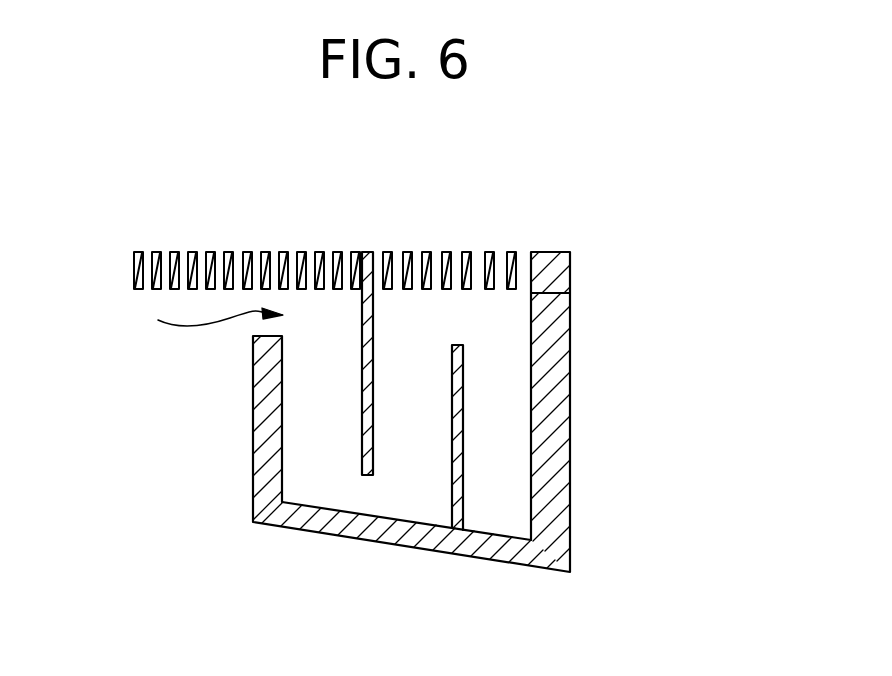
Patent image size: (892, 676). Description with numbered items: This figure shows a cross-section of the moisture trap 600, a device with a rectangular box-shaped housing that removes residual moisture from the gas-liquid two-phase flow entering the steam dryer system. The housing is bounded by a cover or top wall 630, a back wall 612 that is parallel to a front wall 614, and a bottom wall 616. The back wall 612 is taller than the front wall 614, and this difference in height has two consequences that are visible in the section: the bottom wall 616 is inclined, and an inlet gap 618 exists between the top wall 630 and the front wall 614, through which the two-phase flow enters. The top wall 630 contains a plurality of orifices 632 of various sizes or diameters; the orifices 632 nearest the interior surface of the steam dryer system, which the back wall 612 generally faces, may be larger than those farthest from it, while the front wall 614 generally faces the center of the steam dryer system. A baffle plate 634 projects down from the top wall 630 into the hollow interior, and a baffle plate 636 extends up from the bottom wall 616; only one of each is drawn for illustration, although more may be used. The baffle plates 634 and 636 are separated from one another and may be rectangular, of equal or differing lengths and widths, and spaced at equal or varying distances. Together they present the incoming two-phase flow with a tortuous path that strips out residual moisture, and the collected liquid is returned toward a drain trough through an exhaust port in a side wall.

The moisture trap 600 is at (747, 232).
The back wall 612 is at (558, 362).
The front wall 614 is at (262, 484).
The bottom wall 616 is at (478, 555).
The inlet gap 618 is at (196, 320).
The top wall 630 is at (390, 252).
The orifices 632 is at (236, 251).
The baffle plate 634 is at (362, 426).
The baffle plate 636 is at (452, 484).